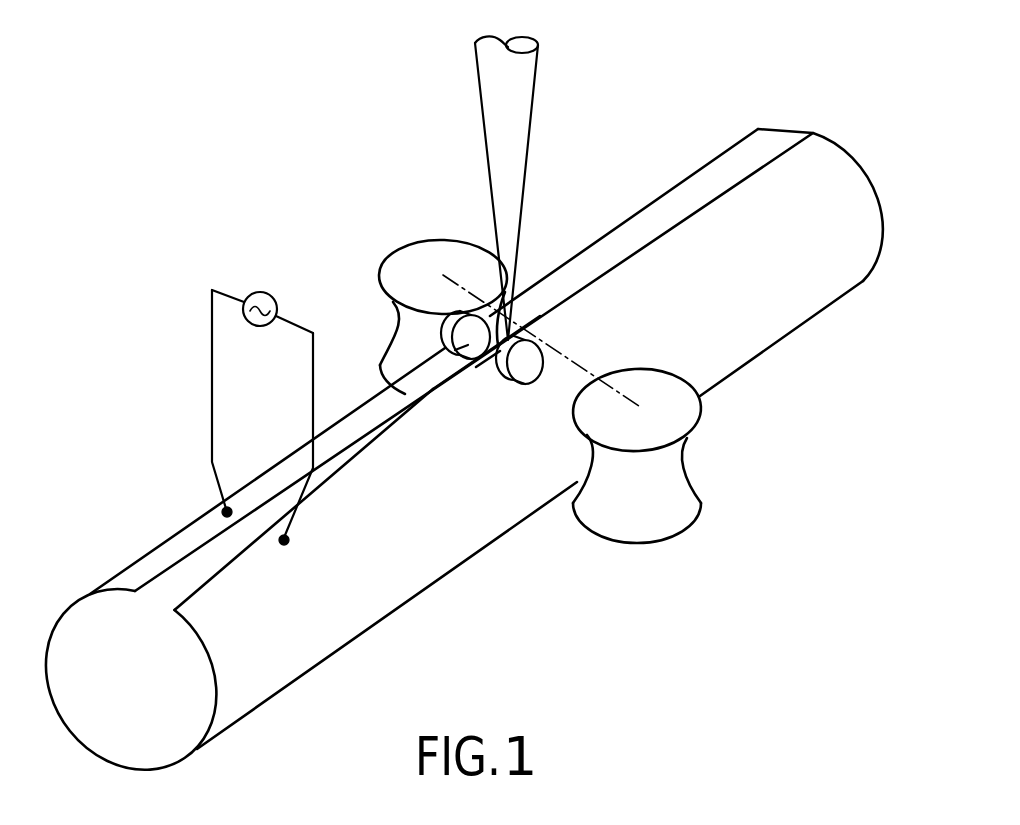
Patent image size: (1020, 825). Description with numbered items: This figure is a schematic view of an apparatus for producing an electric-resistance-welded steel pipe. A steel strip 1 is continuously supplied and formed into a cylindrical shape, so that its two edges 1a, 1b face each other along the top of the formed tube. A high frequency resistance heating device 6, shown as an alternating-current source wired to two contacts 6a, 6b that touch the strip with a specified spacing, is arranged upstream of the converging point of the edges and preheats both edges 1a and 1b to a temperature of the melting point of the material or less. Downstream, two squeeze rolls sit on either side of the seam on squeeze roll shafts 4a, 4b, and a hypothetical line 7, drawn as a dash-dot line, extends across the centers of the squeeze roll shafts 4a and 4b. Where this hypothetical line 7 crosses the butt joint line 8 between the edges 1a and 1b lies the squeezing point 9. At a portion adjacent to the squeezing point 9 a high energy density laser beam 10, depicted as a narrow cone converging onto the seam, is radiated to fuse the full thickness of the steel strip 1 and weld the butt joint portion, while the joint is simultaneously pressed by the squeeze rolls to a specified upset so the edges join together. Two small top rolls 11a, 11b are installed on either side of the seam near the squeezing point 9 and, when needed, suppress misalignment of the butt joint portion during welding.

The steel strip 1 is at (278, 690).
The edge of the steel strip 1a is at (363, 437).
The edge of the steel strip 1b is at (353, 462).
The squeeze roll shaft 4a is at (447, 238).
The squeeze roll shaft 4b is at (697, 430).
The high frequency resistance heating device 6 is at (212, 362).
The contact of the high frequency resistance heating device 6a is at (222, 509).
The contact of the high frequency resistance heating device 6b is at (288, 542).
The hypothetical line 7 is at (588, 368).
The butt joint line 8 is at (491, 362).
The squeezing point 9 is at (528, 322).
The high energy density laser beam 10 is at (535, 78).
The top roll 11a is at (443, 354).
The top roll 11b is at (522, 382).